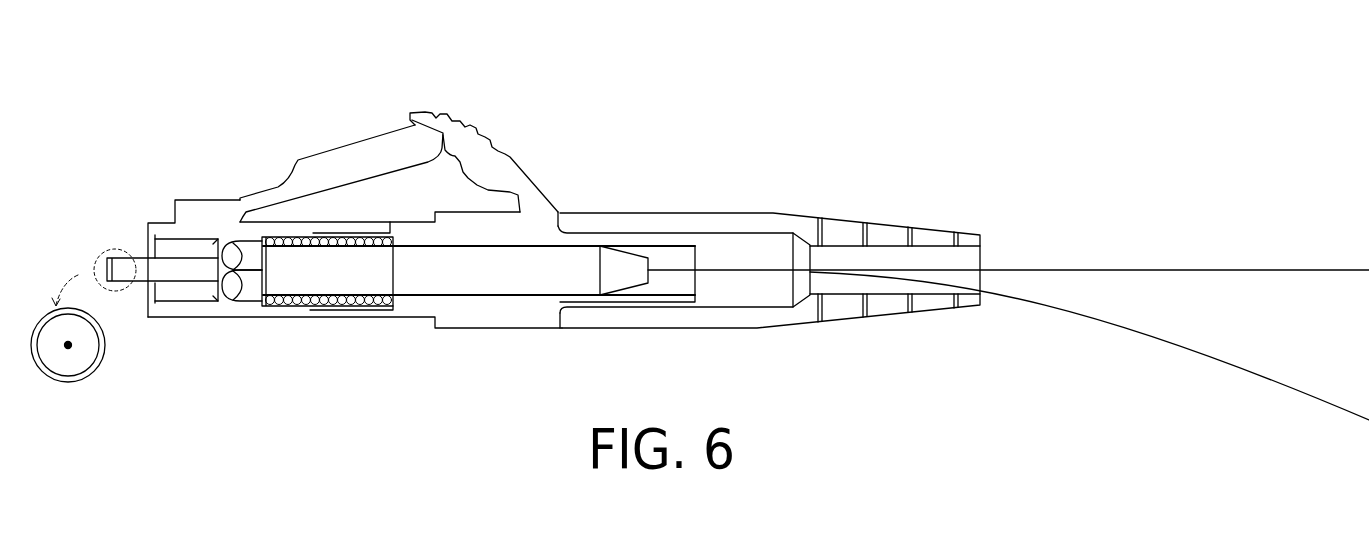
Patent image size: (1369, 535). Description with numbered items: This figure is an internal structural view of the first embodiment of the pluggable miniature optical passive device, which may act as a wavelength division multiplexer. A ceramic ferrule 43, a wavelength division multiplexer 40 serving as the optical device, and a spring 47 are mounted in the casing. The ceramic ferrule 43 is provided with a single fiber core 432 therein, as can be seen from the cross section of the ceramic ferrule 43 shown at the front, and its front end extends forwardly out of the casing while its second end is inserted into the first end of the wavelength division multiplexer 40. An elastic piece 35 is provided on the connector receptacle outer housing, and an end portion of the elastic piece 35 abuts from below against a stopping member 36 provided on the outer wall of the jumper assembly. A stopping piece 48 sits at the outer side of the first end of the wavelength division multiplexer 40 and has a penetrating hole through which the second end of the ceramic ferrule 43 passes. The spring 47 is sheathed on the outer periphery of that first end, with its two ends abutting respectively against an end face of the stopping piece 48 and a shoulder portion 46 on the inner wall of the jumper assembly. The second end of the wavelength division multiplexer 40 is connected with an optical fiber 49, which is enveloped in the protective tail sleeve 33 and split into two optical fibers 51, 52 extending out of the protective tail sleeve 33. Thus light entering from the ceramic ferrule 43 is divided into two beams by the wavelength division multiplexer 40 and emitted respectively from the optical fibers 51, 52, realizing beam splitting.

The protective tail sleeve 33 is at (745, 320).
The elastic piece 35 is at (377, 158).
The stopping member 36 is at (472, 123).
The wavelength division multiplexer 40 is at (497, 272).
The ceramic ferrule 43 is at (183, 268).
The fiber core 432 is at (70, 347).
The shoulder portion 46 is at (400, 247).
The spring 47 is at (347, 307).
The stopping piece 48 is at (243, 305).
The optical fiber 49 is at (668, 268).
The optical fiber 51 is at (1135, 270).
The optical fiber 52 is at (1162, 333).